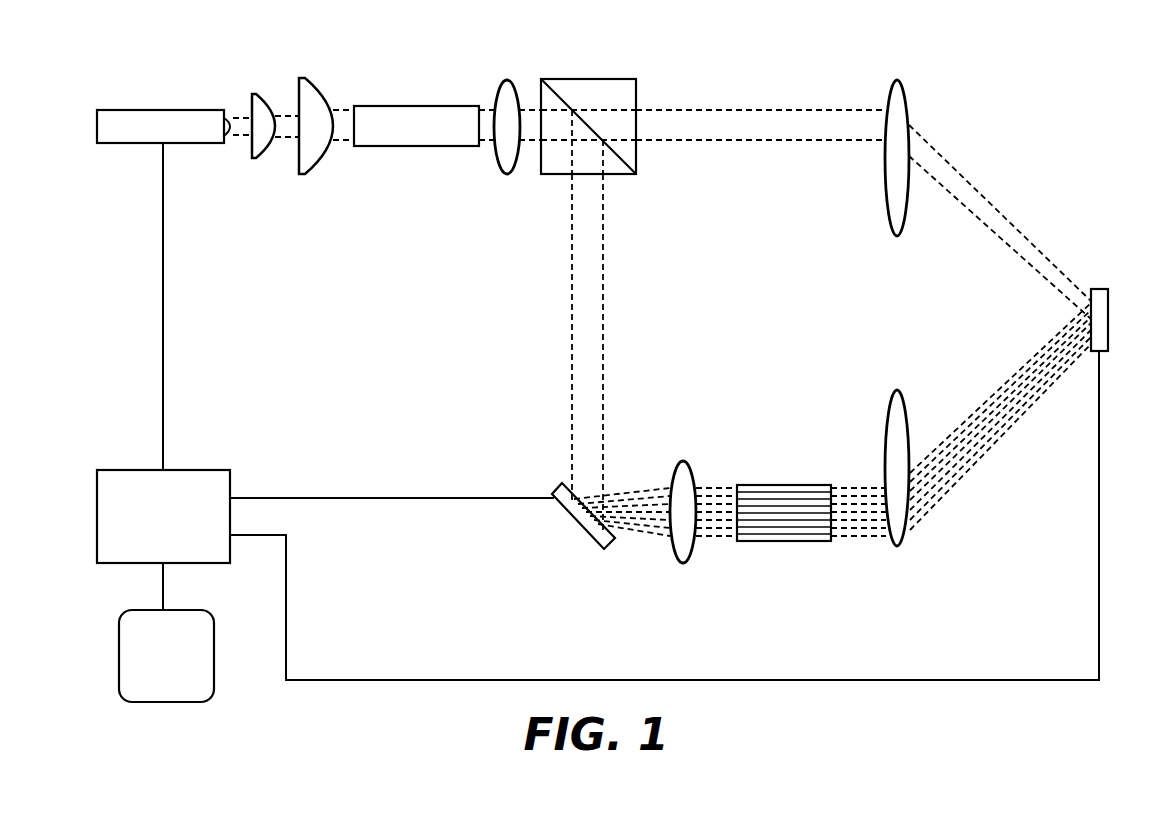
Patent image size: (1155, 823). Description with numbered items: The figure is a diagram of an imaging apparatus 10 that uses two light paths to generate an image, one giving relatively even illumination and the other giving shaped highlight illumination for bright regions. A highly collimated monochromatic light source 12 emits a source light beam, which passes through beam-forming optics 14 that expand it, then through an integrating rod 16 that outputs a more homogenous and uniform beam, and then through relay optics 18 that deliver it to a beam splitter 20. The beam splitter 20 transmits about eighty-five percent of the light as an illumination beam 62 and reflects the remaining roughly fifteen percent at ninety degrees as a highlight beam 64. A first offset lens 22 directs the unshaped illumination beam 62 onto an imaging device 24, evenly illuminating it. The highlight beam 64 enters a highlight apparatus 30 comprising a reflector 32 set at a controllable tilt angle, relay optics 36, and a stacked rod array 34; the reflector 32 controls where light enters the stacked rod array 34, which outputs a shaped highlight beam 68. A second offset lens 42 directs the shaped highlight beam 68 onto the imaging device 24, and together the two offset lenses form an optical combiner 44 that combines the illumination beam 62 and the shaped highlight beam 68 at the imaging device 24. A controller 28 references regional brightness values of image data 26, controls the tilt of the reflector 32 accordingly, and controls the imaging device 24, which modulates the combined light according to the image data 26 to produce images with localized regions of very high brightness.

The imaging apparatus 10 is at (1036, 80).
The light source 12 is at (163, 126).
The beam-forming optics 14 is at (333, 74).
The integrating rod 16 is at (424, 122).
The relay optics 18 is at (501, 92).
The beam splitter 20 is at (587, 87).
The first offset lens 22 is at (895, 92).
The imaging device 24 is at (1098, 286).
The image data 26 is at (166, 656).
The controller 28 is at (163, 516).
The highlight apparatus 30 is at (691, 561).
The reflector 32 is at (588, 525).
The stacked rod array 34 is at (784, 544).
The relay optics 36 is at (684, 546).
The second offset lens 42 is at (903, 536).
The optical combiner 44 is at (892, 252).
The illumination beam 62 is at (761, 125).
The highlight beam 64 is at (587, 322).
The shaped highlight beam 68 is at (852, 474).